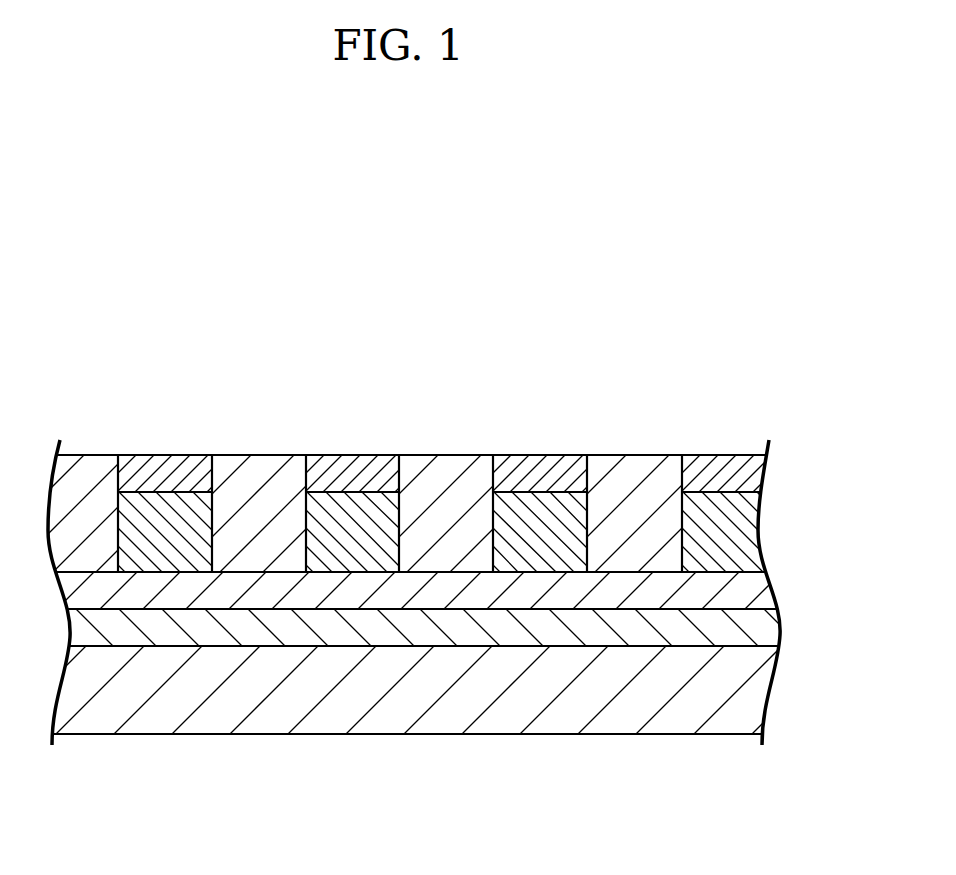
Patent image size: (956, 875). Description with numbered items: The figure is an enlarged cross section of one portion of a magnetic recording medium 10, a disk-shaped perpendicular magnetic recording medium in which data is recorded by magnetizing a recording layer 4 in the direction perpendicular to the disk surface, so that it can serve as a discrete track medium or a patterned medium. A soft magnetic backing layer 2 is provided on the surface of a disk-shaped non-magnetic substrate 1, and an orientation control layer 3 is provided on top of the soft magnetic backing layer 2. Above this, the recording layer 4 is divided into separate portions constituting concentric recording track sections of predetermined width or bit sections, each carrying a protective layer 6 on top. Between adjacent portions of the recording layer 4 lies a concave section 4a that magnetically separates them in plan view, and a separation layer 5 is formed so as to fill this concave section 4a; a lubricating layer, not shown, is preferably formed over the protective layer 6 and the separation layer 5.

The non-magnetic substrate 1 is at (743, 707).
The soft magnetic backing layer 2 is at (768, 630).
The orientation control layer 3 is at (750, 597).
The recording layer 4 is at (350, 512).
The concave section 4a is at (588, 530).
The separation layer 5 is at (238, 467).
The protective layer 6 is at (183, 460).
The magnetic recording medium 10 is at (755, 308).